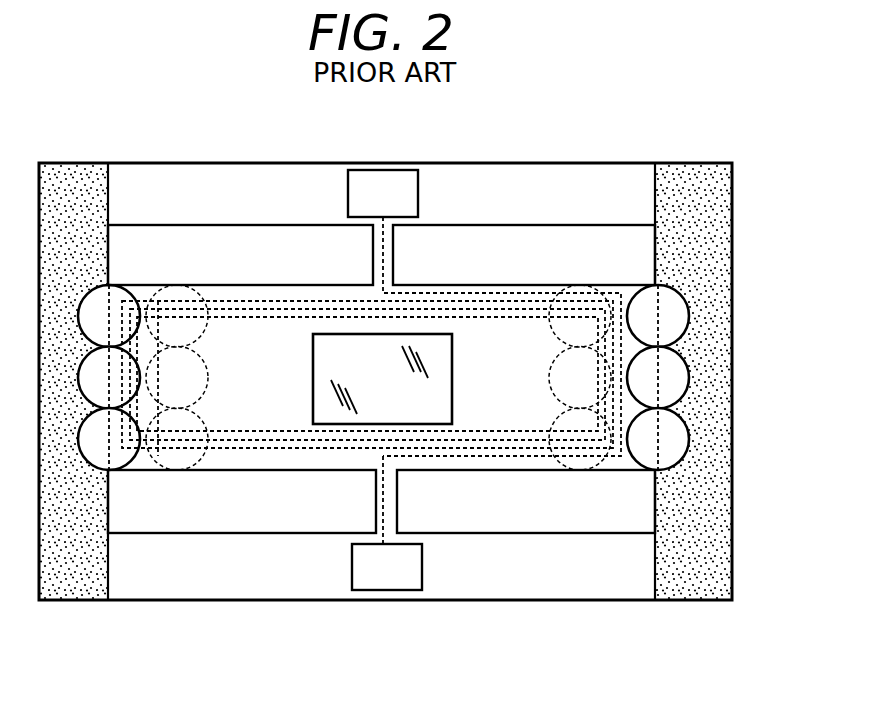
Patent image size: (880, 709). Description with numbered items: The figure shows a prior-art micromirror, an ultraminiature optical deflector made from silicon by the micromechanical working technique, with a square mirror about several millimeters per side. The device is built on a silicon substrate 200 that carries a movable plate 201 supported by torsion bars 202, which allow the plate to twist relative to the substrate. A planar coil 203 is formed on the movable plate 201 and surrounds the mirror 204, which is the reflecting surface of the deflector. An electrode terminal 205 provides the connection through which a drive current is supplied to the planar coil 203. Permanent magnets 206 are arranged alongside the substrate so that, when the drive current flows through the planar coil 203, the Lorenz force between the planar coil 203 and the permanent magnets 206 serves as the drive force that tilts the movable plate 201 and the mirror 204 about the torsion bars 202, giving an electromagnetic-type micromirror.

The silicon substrate 200 is at (540, 177).
The movable plate 201 is at (245, 295).
The torsion bars 202 is at (397, 497).
The planar coil 203 is at (287, 457).
The mirror 204 is at (452, 372).
The electrode terminal 205 is at (393, 576).
The permanent magnets 206 is at (688, 325).